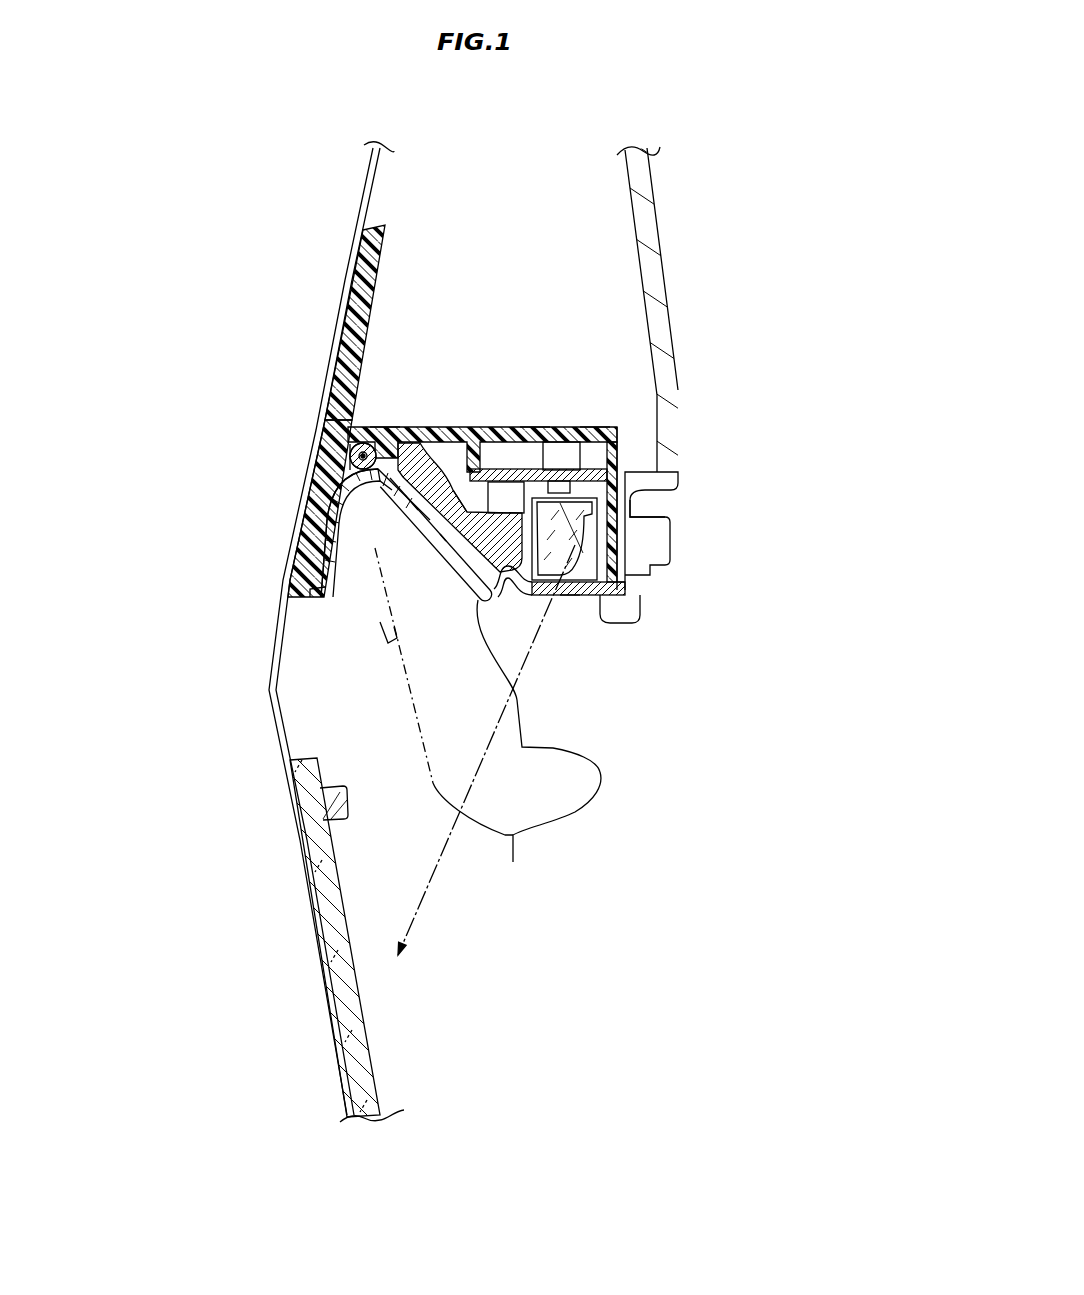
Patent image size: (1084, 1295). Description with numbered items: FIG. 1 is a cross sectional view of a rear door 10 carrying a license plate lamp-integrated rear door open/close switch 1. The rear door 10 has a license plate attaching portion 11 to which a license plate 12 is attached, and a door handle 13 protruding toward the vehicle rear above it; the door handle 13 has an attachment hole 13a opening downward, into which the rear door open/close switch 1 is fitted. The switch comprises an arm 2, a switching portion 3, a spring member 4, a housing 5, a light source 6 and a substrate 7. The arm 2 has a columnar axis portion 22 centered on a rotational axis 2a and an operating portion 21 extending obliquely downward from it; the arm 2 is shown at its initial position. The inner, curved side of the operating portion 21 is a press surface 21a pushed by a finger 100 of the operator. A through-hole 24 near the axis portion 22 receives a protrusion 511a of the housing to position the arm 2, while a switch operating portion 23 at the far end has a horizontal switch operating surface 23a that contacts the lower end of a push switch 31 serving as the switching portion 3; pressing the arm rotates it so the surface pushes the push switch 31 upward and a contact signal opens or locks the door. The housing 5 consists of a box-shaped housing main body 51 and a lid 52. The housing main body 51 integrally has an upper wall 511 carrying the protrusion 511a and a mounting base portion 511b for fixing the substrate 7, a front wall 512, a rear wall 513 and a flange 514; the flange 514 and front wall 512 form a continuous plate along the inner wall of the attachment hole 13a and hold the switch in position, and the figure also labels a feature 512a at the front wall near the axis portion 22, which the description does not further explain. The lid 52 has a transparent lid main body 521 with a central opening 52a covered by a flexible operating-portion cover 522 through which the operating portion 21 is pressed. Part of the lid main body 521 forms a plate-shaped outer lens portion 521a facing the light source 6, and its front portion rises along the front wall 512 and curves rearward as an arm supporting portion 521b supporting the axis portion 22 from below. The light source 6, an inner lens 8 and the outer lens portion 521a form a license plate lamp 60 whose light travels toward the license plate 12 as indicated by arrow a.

The rear door open/close switch 1 is at (342, 330).
The arm 2 is at (436, 427).
The rotational axis 2a is at (356, 450).
The switching portion 3 is at (578, 460).
The spring member 4 is at (333, 473).
The housing 5 is at (813, 573).
The light source 6 is at (570, 489).
The substrate 7 is at (595, 476).
The inner lens 8 is at (622, 618).
The rear door 10 is at (340, 163).
The license plate attaching portion 11 is at (345, 1085).
The license plate 12 is at (370, 1095).
The door handle 13 is at (677, 304).
The attachment hole 13a is at (345, 585).
The operating portion 21 is at (462, 560).
The press surface 21a is at (440, 558).
The axis portion 22 is at (342, 427).
The switch operating portion 23 is at (470, 510).
The switch operating surface 23a is at (495, 470).
The through-hole 24 is at (384, 484).
The push switch 31 is at (577, 427).
The housing main body 51 is at (640, 565).
The lid 52 is at (628, 603).
The opening 52a is at (410, 500).
The license plate lamp 60 is at (599, 527).
The finger 100 is at (570, 790).
The upper wall 511 is at (416, 427).
The protrusion 511a is at (385, 427).
The mounting base portion 511b is at (533, 427).
The front wall 512 is at (305, 553).
The bearing recess 512a is at (348, 452).
The rear wall 513 is at (628, 556).
The flange 514 is at (372, 255).
The lid main body 521 is at (590, 598).
The outer lens portion 521a is at (570, 596).
The arm supporting portion 521b is at (313, 527).
The operating-portion cover 522 is at (487, 590).
The arrow a is at (437, 878).